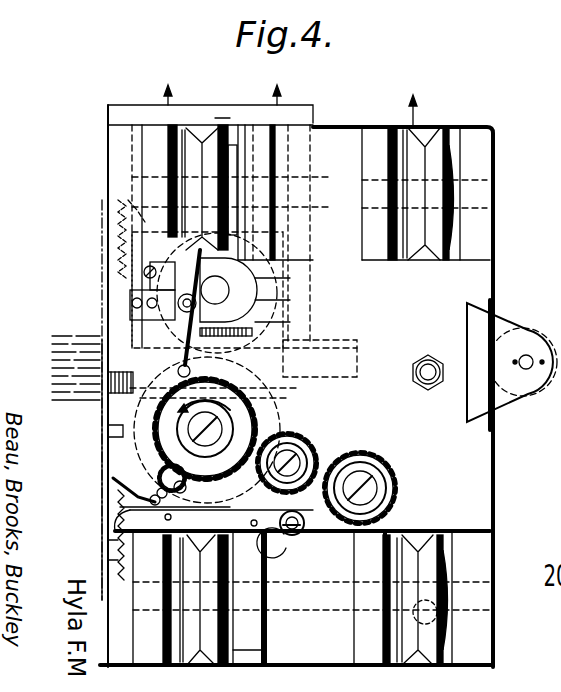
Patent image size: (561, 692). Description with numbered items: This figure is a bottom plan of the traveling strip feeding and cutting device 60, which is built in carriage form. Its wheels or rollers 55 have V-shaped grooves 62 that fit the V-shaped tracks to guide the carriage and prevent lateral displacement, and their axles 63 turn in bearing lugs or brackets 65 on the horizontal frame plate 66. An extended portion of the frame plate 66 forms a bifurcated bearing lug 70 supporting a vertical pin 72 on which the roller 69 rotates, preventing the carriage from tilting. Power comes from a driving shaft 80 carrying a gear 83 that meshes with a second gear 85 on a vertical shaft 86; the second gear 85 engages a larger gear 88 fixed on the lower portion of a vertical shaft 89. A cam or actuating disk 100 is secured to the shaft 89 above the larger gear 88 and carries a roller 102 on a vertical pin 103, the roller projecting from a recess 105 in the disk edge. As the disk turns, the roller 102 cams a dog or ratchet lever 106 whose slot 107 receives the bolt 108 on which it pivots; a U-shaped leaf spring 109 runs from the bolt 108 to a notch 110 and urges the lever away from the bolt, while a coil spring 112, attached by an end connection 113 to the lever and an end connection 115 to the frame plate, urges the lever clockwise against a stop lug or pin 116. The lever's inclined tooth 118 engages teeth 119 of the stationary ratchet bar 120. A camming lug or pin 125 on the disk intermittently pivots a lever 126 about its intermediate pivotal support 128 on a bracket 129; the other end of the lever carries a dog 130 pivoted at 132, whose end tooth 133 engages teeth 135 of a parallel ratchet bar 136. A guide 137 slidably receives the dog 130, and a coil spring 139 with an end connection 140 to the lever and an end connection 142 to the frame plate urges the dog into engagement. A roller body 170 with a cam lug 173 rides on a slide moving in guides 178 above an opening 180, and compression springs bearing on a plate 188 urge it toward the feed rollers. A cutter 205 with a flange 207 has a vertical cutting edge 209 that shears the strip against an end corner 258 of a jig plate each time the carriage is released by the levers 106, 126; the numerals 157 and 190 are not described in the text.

The wheels or rollers 55 is at (178, 147).
The strip feeding and cutting device 60 is at (494, 489).
The V-shaped grooves 62 is at (198, 140).
The axles 63 is at (253, 140).
The bearing lugs or brackets 65 is at (372, 214).
The frame plate 66 is at (488, 466).
The roller 69 is at (500, 325).
The bifurcated bearing lug 70 is at (487, 344).
The vertical pin 72 is at (522, 366).
The driving shaft 80 is at (385, 481).
The gear 83 is at (393, 491).
The second gear 85 is at (325, 433).
The vertical shaft 86 is at (312, 452).
The larger gear 88 is at (255, 412).
The vertical shaft 89 is at (185, 418).
The cam or actuating disk 100 is at (300, 422).
The roller 102 is at (302, 517).
The vertical pin 103 is at (120, 485).
The recess 105 is at (160, 470).
The dog or ratchet lever 106 is at (238, 517).
The slot 107 is at (288, 533).
The bolt 108 is at (302, 530).
The U-shaped leaf spring 109 is at (284, 552).
The notch 110 is at (272, 557).
The coil spring 112 is at (152, 517).
The end connection 113 is at (150, 596).
The end connection 115 is at (162, 470).
The stop lug or pin 116 is at (120, 507).
The inclined tooth 118 is at (118, 530).
The teeth 119 is at (112, 546).
The ratchet bar 120 is at (112, 560).
The camming lug or pin 125 is at (178, 370).
The lever 126 is at (290, 278).
The intermediate pivotal support 128 is at (290, 300).
The bracket 129 is at (178, 302).
The dog 130 is at (128, 210).
The pivot 132 is at (290, 256).
The end tooth 133 is at (142, 232).
The teeth 135 is at (142, 252).
The ratchet bar 136 is at (130, 200).
The guide 137 is at (160, 272).
The coil spring 139 is at (290, 322).
The end connection 140 is at (205, 333).
The end connection 142 is at (290, 346).
The pawl 157 is at (280, 396).
The roller body 170 is at (285, 262).
The cam lug 173 is at (252, 370).
The guides 178 is at (137, 140).
The opening 180 is at (288, 135).
The plate 188 is at (222, 118).
The spring 190 is at (358, 345).
The cutter 205 is at (106, 408).
The flange 207 is at (104, 432).
The vertical cutting edge 209 is at (100, 370).
The end corner 258 is at (100, 348).